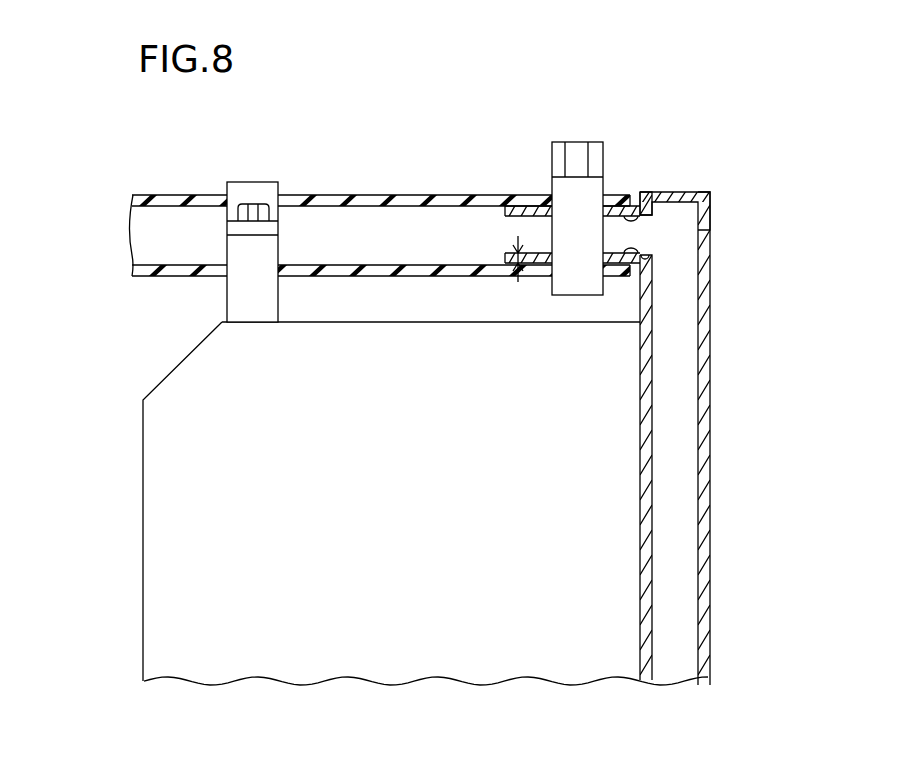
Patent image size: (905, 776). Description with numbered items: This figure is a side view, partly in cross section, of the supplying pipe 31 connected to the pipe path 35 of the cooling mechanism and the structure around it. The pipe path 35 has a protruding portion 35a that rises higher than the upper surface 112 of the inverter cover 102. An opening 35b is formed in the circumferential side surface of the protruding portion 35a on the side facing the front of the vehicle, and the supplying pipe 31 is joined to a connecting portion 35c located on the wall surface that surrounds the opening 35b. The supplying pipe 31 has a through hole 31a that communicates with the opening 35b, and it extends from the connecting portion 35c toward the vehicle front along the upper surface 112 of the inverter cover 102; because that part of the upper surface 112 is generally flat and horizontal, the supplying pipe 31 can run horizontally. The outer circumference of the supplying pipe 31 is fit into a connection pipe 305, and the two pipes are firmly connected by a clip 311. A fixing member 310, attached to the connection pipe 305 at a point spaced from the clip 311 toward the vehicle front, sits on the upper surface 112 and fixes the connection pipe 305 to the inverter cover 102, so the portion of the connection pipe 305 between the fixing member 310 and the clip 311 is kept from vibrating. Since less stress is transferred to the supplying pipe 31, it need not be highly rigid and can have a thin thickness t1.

The inverter cover 102 is at (143, 478).
The upper surface 112 is at (317, 321).
The connection pipe 305 is at (393, 194).
The supplying pipe 31 is at (514, 206).
The thickness t1 is at (507, 256).
The fixing member 310 is at (251, 181).
The clip 311 is at (578, 141).
The through hole 31a is at (622, 214).
The pipe path 35 is at (675, 453).
The protruding portion 35a is at (707, 218).
The opening 35b is at (652, 218).
The connecting portion 35c is at (640, 255).